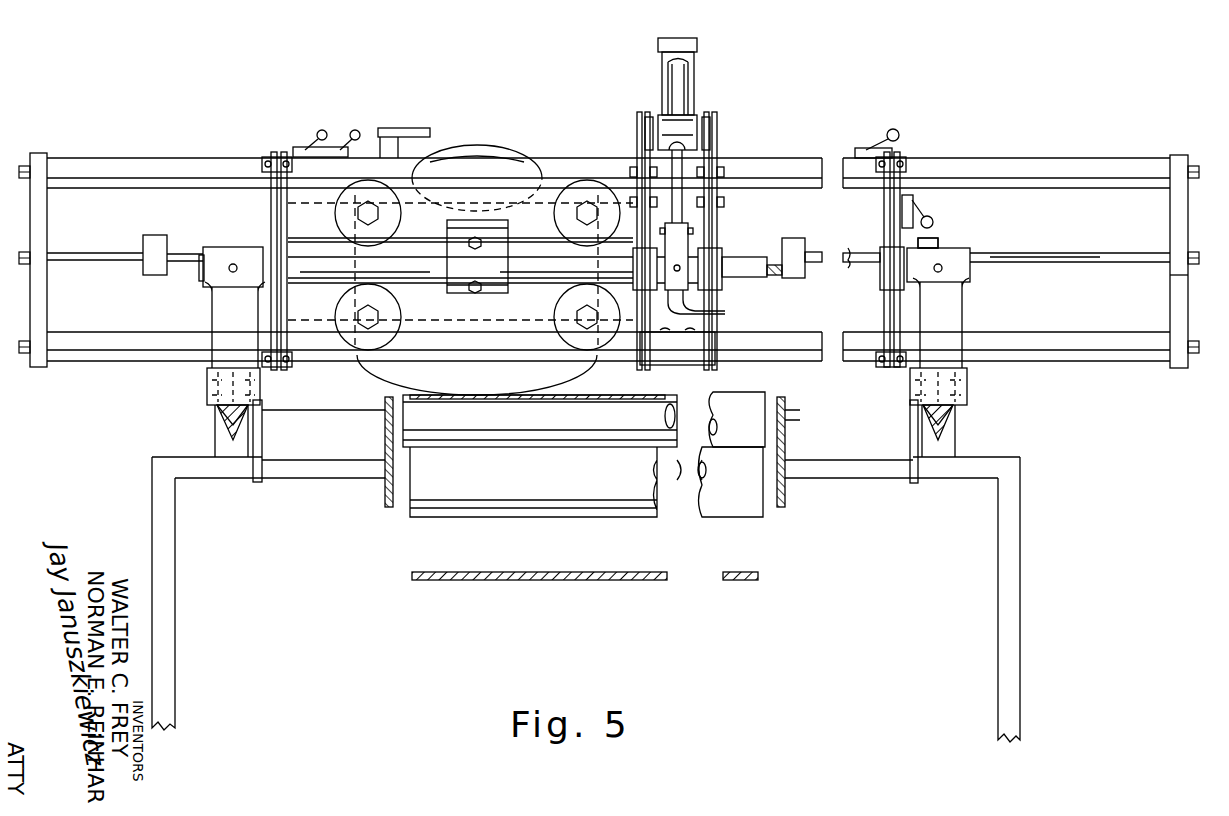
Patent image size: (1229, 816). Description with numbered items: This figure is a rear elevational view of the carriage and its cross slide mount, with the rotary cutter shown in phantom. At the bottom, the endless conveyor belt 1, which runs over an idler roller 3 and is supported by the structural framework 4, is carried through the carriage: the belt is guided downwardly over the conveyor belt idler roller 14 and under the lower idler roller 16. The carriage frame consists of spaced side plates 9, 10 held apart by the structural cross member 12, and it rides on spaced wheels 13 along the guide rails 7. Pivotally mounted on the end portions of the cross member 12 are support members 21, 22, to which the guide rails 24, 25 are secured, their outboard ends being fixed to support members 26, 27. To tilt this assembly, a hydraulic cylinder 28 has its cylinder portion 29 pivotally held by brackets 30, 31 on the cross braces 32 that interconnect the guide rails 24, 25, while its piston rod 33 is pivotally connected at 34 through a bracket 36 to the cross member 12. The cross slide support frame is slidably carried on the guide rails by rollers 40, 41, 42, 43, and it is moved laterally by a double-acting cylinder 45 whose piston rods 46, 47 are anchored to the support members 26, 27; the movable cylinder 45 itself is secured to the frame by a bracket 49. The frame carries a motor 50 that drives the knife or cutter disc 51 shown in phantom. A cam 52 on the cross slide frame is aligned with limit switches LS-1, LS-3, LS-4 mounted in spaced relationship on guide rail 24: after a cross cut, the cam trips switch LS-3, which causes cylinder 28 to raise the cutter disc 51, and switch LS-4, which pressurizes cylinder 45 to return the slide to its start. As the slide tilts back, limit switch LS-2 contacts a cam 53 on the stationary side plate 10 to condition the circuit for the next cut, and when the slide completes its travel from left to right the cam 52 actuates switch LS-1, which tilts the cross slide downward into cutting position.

The endless conveyor belt 1 is at (538, 576).
The idler roller 3 is at (689, 470).
The structural framework 4 is at (998, 698).
The guide rails 7 is at (220, 432).
The side plate 9 is at (212, 324).
The side plate 10 is at (965, 327).
The structural cross member 12 is at (175, 250).
The wheels 13 is at (210, 405).
The conveyor belt idler roller 14 is at (540, 430).
The idler roller 16 is at (722, 498).
The support member 21 is at (272, 212).
The support member 22 is at (885, 315).
The guide rail 24 is at (75, 165).
The guide rail 25 is at (150, 357).
The support member 26 is at (1172, 280).
The support member 27 is at (40, 232).
The hydraulic cylinder 28 is at (714, 59).
The cylinder portion 29 is at (673, 78).
The bracket 30 is at (712, 150).
The bracket 31 is at (648, 145).
The cross braces 32 is at (677, 347).
The piston rod 33 is at (705, 195).
The pivotal connection 34 is at (693, 233).
The bracket 36 is at (725, 318).
The roller 40 is at (577, 190).
The roller 41 is at (555, 316).
The roller 42 is at (345, 212).
The roller 43 is at (395, 316).
The double-acting cylinder 45 is at (245, 246).
The piston rod 46 is at (1100, 255).
The piston rod 47 is at (122, 262).
The bracket 49 is at (495, 240).
The motor 50 is at (473, 150).
The cutter disc 51 is at (375, 368).
The cam 52 is at (418, 126).
The cam 53 is at (940, 243).
The limit switch LS-1 is at (868, 148).
The limit switch LS-2 is at (928, 210).
The limit switch LS-3 is at (352, 130).
The limit switch LS-4 is at (320, 142).